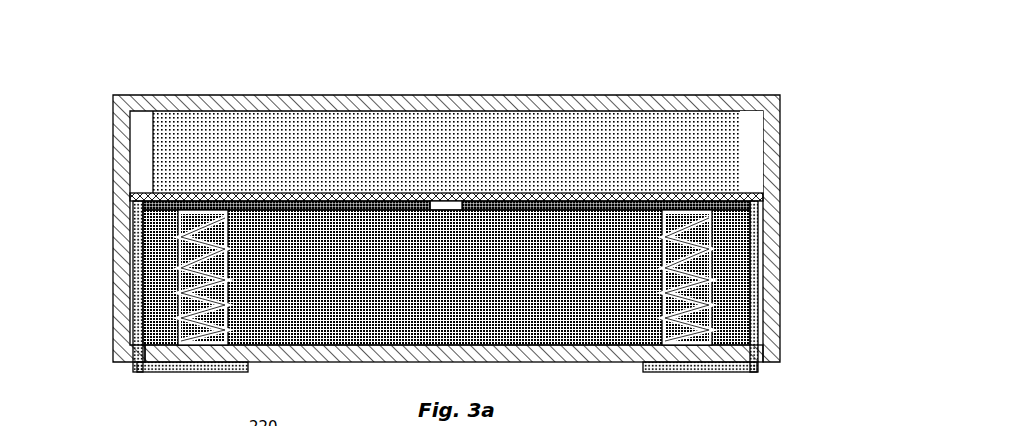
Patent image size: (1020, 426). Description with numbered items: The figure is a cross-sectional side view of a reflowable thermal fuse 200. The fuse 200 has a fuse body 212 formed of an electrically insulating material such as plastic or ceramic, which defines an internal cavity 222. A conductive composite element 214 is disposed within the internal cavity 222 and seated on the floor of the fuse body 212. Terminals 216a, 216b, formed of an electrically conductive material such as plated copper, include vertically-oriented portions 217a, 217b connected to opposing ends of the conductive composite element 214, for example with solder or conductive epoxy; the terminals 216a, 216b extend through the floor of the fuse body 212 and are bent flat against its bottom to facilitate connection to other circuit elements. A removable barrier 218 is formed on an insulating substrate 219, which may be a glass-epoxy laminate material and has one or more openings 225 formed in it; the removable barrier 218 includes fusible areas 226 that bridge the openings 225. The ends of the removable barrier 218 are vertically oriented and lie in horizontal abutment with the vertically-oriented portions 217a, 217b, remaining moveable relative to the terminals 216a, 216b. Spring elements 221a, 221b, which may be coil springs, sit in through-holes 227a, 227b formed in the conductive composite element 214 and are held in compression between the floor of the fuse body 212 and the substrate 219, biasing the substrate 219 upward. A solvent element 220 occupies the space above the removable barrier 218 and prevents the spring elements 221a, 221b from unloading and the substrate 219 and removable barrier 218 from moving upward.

The reflowable thermal fuse 200 is at (444, 213).
The fuse body 212 is at (210, 97).
The conductive composite element 214 is at (543, 320).
The terminal 216a is at (200, 372).
The terminal 216b is at (693, 370).
The vertically-oriented portion 217a is at (140, 269).
The vertically-oriented portion 217b is at (759, 263).
The removable barrier 218 is at (565, 198).
The substrate 219 is at (622, 205).
The solvent element 220 is at (295, 132).
The spring element 221a is at (128, 274).
The spring element 221b is at (763, 269).
The internal cavity 222 is at (752, 126).
The opening 225 is at (455, 201).
The fusible area 226 is at (442, 198).
The through-hole 227a is at (176, 295).
The through-hole 227b is at (713, 284).